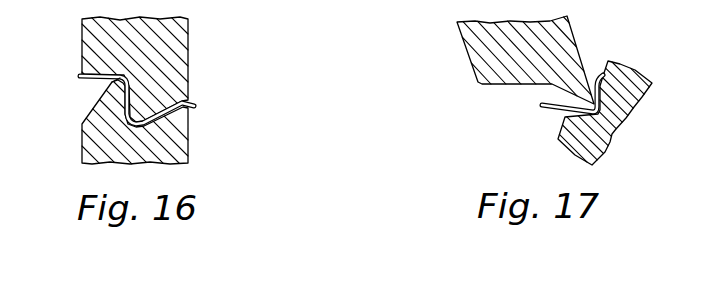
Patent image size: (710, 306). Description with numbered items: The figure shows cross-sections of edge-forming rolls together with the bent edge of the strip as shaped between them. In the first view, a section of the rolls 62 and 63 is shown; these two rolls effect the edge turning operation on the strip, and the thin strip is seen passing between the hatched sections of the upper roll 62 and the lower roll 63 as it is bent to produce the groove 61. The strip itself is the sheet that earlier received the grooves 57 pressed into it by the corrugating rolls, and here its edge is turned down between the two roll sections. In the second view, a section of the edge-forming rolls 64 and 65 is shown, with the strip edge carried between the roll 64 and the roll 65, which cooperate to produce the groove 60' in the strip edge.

In FIG. 16, the grooves 57 is at (150, 111).
In FIG. 16, the groove 61 is at (112, 82).
In FIG. 16, the roll 62 is at (189, 61).
In FIG. 16, the roll 63 is at (189, 146).
In FIG. 17, the edge-forming roll 64 is at (581, 53).
In FIG. 17, the groove 60' is at (588, 73).
In FIG. 17, the edge-forming roll 65 is at (636, 108).